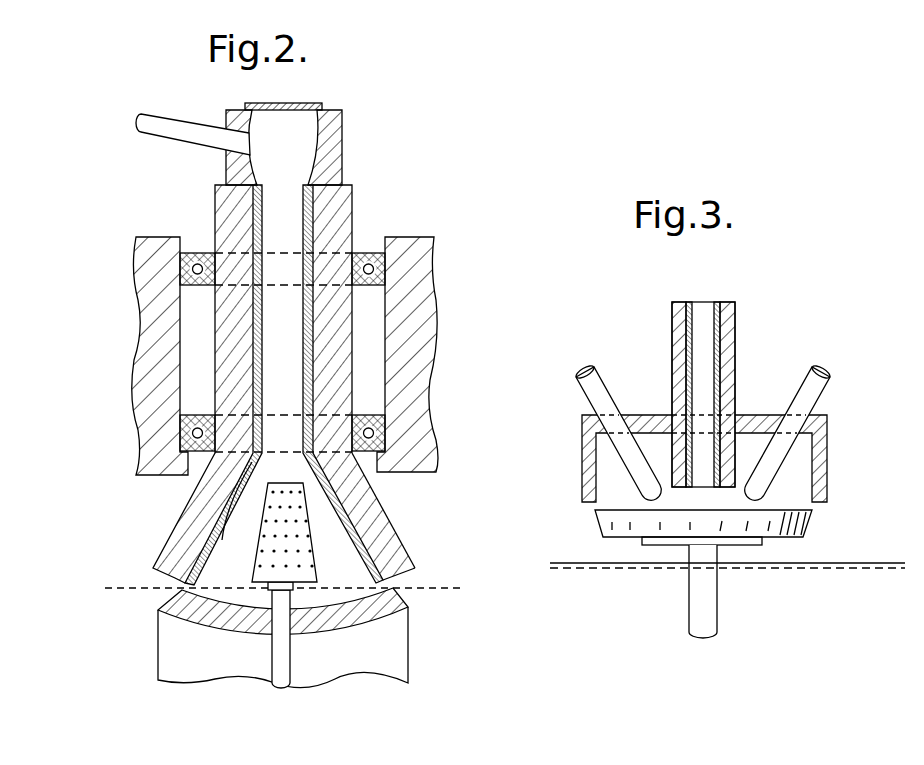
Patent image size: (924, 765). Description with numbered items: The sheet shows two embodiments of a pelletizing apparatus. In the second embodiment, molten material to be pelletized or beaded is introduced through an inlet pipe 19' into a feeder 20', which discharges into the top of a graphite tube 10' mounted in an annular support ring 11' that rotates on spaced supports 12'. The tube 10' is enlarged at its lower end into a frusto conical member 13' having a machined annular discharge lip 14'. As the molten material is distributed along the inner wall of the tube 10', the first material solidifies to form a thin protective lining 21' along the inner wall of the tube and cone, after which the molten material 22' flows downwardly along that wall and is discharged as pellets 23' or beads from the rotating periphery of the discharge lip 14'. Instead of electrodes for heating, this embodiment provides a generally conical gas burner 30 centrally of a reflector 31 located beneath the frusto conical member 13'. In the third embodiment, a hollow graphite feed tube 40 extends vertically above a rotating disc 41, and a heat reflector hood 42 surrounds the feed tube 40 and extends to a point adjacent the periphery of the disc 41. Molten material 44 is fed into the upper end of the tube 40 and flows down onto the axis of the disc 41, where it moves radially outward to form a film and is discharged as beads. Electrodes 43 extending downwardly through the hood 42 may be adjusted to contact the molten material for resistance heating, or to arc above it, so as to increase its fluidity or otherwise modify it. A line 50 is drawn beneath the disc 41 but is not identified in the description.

In FIG. 2, the inlet pipe 19' is at (193, 141).
In FIG. 2, the feeder 20' is at (314, 144).
In FIG. 2, the graphite tube 10' is at (297, 380).
In FIG. 2, the annular support ring 11' is at (332, 328).
In FIG. 2, the spaced supports 12' is at (306, 356).
In FIG. 2, the protective lining 21' is at (192, 518).
In FIG. 2, the molten material 22' is at (188, 501).
In FIG. 2, the pellets 23' is at (274, 571).
In FIG. 2, the frusto conical member 13' is at (376, 516).
In FIG. 2, the discharge lip 14' is at (425, 568).
In FIG. 2, the gas burner 30 is at (298, 558).
In FIG. 2, the reflector 31 is at (334, 605).
In FIG. 3, the feed tube 40 is at (737, 337).
In FIG. 3, the molten material 44 is at (692, 322).
In FIG. 3, the electrodes 43 is at (598, 378).
In FIG. 3, the heat reflector hood 42 is at (828, 440).
In FIG. 3, the rotating disc 41 is at (780, 511).
In FIG. 3, the ground line 50 is at (808, 563).